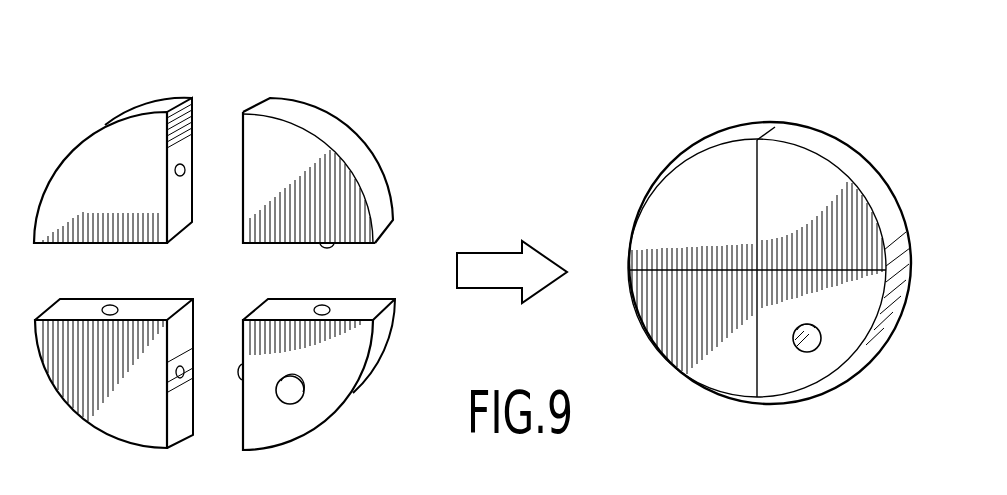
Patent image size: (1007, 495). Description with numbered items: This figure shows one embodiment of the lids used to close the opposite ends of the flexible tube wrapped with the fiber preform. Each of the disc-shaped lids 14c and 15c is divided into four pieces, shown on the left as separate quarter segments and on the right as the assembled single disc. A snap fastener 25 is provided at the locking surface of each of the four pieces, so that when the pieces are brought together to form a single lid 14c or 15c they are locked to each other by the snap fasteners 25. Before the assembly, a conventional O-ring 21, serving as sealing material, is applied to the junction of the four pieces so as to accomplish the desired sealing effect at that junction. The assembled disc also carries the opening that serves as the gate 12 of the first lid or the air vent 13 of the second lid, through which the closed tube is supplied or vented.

The O-ring 21 is at (186, 126).
The snap fastener 25 is at (186, 170).
The disc-shaped lid 14c is at (769, 257).
The disc-shaped lid 15c is at (811, 137).
The gate 12 is at (799, 389).
The air vent 13 is at (801, 351).